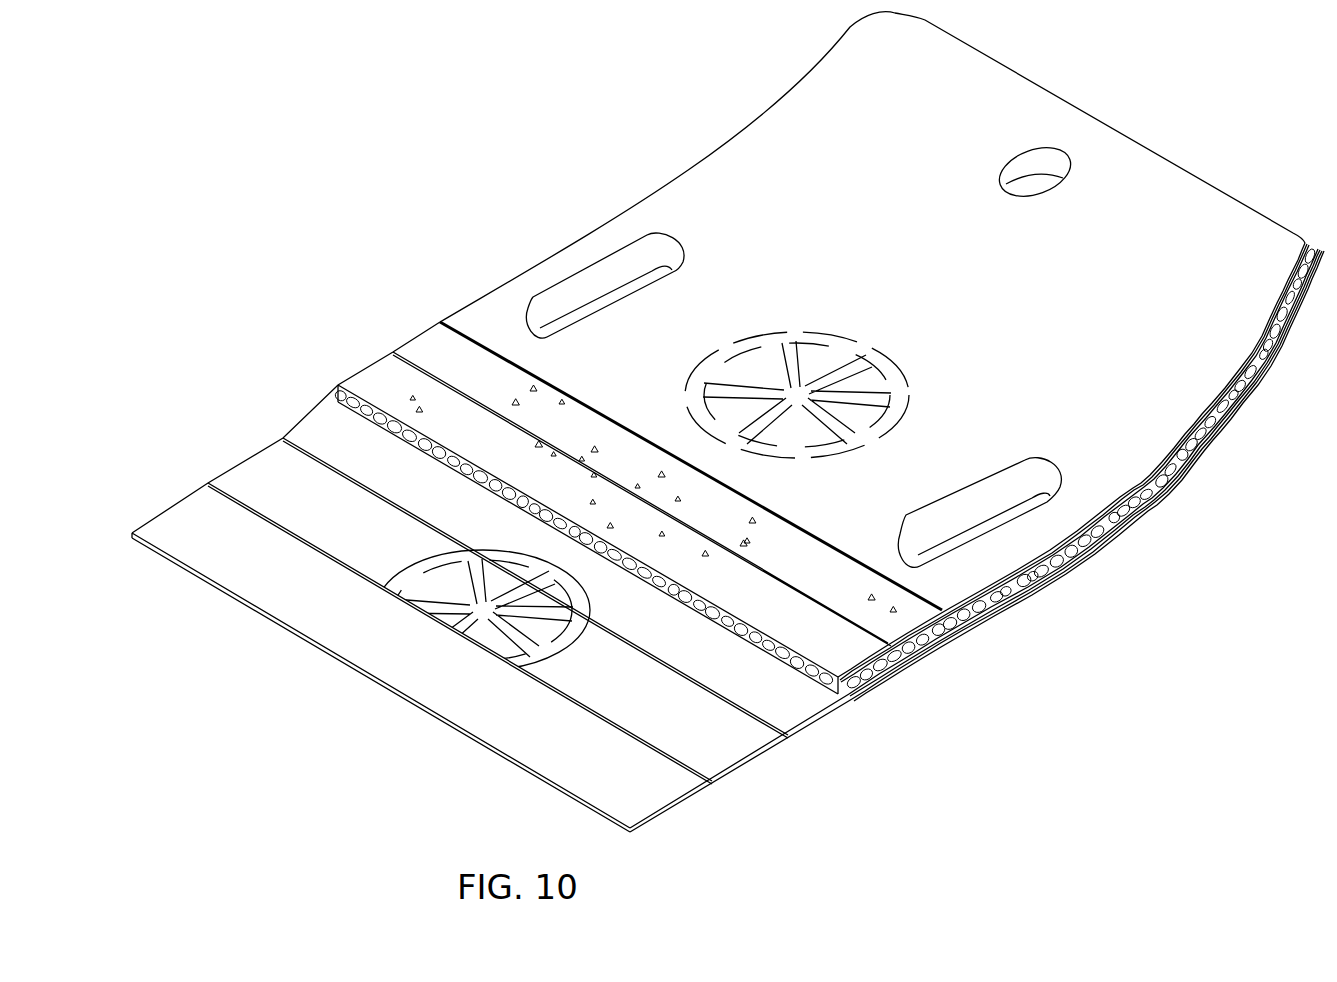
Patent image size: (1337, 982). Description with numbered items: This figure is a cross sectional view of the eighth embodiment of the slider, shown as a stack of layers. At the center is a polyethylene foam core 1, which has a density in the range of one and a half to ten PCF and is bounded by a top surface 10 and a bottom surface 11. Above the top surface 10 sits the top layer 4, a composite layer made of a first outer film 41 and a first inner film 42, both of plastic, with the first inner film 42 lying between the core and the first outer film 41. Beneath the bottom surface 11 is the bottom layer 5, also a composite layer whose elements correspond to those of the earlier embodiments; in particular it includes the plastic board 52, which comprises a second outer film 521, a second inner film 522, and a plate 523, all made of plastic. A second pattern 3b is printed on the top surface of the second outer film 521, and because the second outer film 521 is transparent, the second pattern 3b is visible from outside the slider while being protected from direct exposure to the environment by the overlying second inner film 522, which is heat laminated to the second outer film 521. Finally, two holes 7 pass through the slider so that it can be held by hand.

The polyethylene foam core 1 is at (808, 503).
The second pattern 3b is at (400, 580).
The top layer 4 is at (849, 383).
The bottom layer 5 is at (927, 812).
The holes 7 is at (583, 300).
The top surface 10 is at (443, 405).
The bottom surface 11 is at (428, 478).
The first outer film 41 is at (988, 578).
The first inner film 42 is at (925, 620).
The plastic board 52 is at (514, 671).
The second outer film 521 is at (737, 758).
The second inner film 522 is at (590, 616).
The plate 523 is at (647, 815).